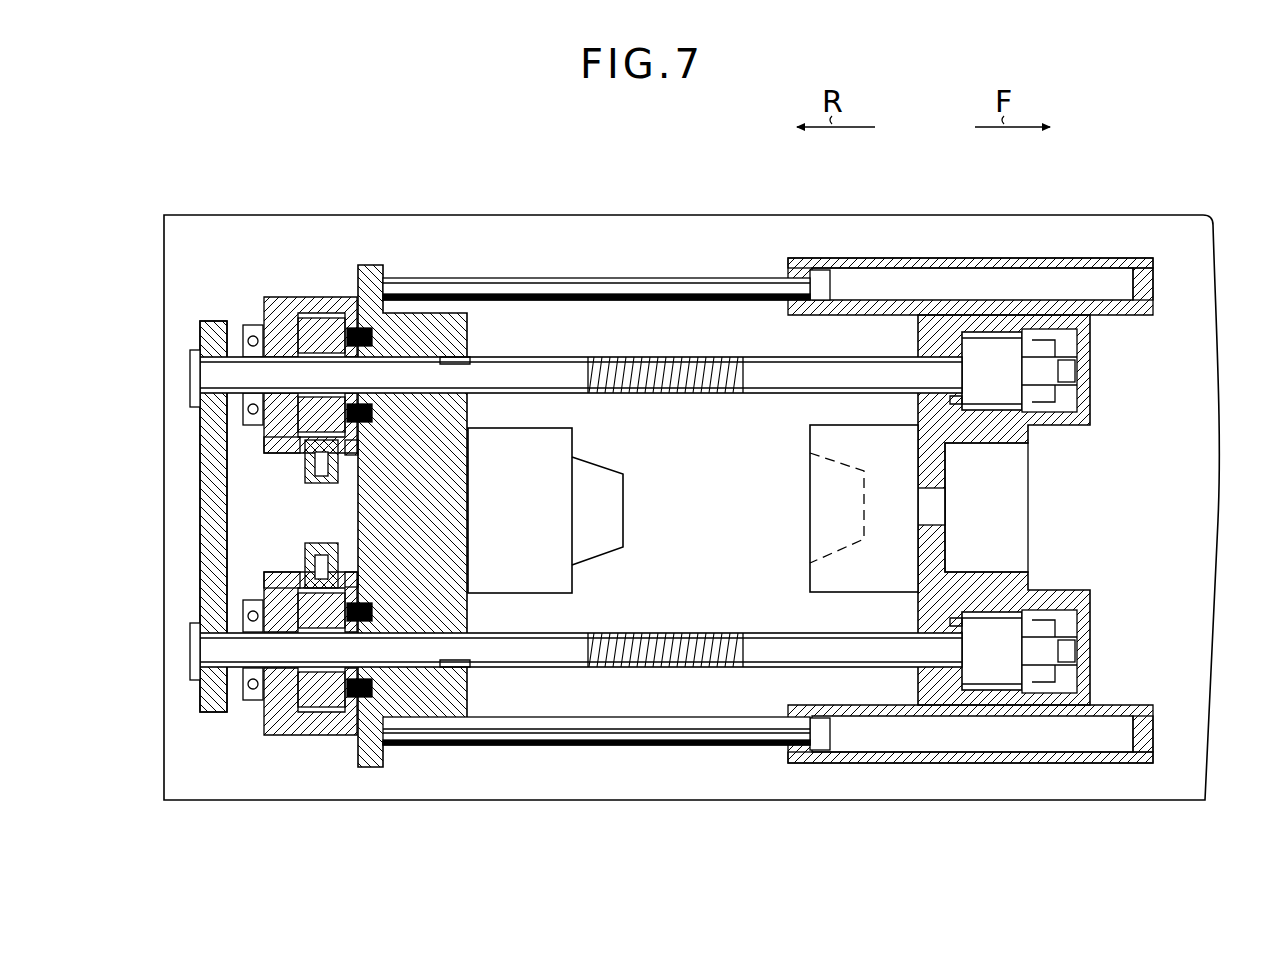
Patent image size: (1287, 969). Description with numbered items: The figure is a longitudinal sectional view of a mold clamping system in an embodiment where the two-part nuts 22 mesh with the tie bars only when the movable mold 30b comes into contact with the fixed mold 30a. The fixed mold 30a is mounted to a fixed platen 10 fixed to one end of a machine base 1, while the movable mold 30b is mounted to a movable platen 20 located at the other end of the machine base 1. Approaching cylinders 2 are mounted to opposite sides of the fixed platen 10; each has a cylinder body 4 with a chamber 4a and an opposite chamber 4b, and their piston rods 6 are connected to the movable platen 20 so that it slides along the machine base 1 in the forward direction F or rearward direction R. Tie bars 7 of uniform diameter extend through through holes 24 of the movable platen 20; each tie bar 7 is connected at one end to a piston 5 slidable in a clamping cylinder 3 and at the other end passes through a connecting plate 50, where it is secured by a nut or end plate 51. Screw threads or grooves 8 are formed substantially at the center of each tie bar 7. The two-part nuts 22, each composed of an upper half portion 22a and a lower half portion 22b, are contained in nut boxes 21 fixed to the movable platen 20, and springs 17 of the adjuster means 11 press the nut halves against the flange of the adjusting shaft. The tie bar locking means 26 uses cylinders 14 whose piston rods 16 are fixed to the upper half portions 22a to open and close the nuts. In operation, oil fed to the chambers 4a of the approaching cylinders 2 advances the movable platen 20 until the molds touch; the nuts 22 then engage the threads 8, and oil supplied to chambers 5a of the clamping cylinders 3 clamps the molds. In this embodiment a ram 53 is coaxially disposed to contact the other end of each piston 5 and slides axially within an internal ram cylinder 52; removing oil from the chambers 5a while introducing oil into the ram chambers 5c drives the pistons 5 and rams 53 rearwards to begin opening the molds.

The machine base 1 is at (1087, 216).
The approaching cylinders 2 is at (1100, 287).
The clamping cylinders 3 is at (975, 350).
The guide housing 4 is at (822, 270).
The chambers of the approaching cylinders 4a is at (798, 262).
The guide housing wall 4b is at (942, 276).
The piston 5 is at (1005, 332).
The chambers of the clamping cylinders 5a is at (950, 400).
The ram chambers 5c is at (1075, 372).
The piston rods 6 is at (638, 290).
The tie bars 7 is at (760, 357).
The screw threads or grooves 8 is at (652, 357).
The fixed platen 10 is at (985, 440).
The adjuster means 11 is at (208, 450).
The cylinders 14 is at (322, 462).
The piston rods 16 is at (300, 483).
The springs 17 is at (372, 337).
The movable platen 20 is at (420, 322).
The nut boxes 21 is at (252, 325).
The two-part nuts 22 is at (292, 297).
The upper half portion 22a is at (262, 453).
The lower half portion 22b is at (318, 332).
The through holes 24 is at (455, 363).
The tie bar locking means 26 is at (300, 495).
The fixed mold 30a is at (823, 515).
The movable mold 30b is at (600, 476).
The connecting plate 50 is at (213, 330).
The nut or end plate 51 is at (190, 360).
The internal ram cylinder 52 is at (1075, 352).
The ram 53 is at (1075, 338).